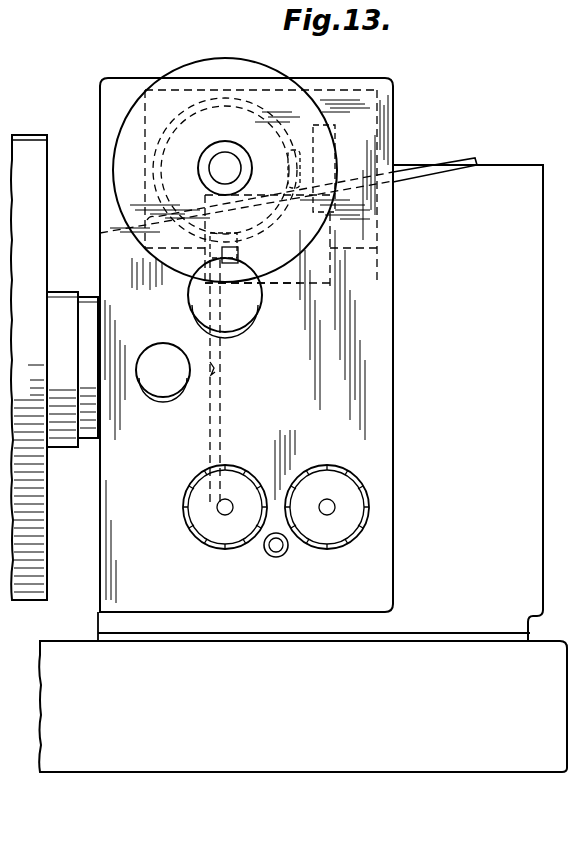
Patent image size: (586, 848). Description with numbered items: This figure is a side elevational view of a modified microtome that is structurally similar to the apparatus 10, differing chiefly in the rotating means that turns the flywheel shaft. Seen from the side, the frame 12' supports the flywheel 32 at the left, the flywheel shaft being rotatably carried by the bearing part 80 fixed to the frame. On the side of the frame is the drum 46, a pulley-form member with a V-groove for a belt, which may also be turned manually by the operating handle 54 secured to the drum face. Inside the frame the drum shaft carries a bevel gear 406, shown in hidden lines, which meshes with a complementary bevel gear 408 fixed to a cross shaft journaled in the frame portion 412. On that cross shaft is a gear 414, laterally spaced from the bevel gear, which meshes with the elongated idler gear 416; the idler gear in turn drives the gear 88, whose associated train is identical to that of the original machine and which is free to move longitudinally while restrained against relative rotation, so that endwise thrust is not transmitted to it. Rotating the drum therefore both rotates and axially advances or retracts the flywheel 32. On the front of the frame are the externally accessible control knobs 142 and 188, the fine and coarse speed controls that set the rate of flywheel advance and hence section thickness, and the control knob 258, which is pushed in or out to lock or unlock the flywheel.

The apparatus 10 is at (146, 69).
The frame 12' is at (303, 639).
The flywheel 32 is at (22, 133).
The drum 46 is at (171, 95).
The operating handle 54 is at (200, 298).
The bearing part 80 is at (64, 448).
The gear 88 is at (218, 368).
The control knob 142 is at (352, 524).
The control knob 188 is at (205, 516).
The control knob 258 is at (152, 390).
The bevel gear 406 is at (222, 108).
The bevel gear 408 is at (292, 165).
The portion 412 is at (395, 163).
The gear 414 is at (325, 142).
The idler gear 416 is at (293, 280).